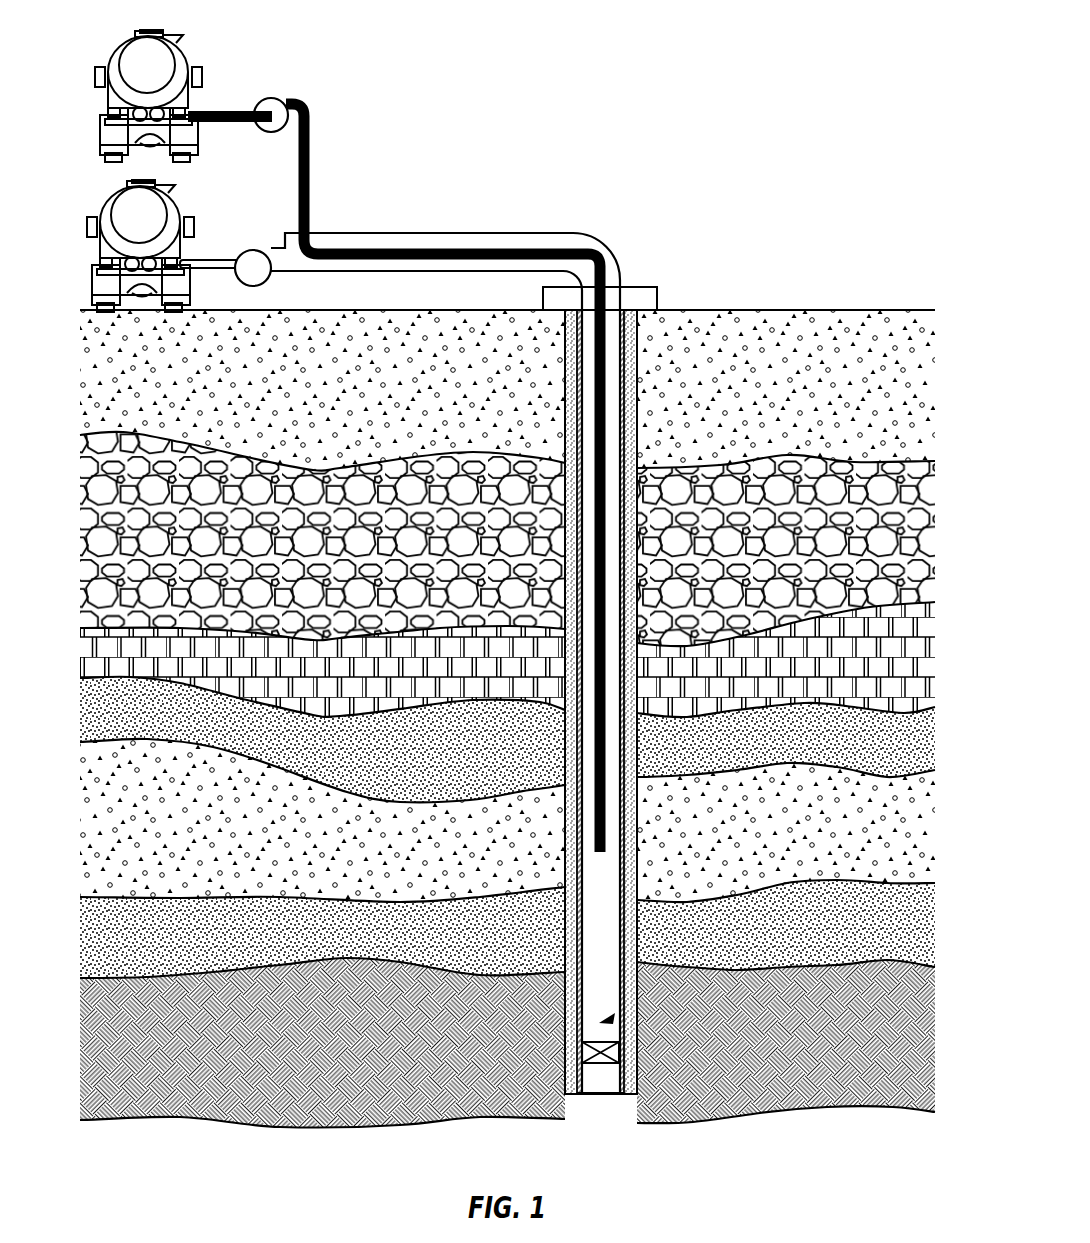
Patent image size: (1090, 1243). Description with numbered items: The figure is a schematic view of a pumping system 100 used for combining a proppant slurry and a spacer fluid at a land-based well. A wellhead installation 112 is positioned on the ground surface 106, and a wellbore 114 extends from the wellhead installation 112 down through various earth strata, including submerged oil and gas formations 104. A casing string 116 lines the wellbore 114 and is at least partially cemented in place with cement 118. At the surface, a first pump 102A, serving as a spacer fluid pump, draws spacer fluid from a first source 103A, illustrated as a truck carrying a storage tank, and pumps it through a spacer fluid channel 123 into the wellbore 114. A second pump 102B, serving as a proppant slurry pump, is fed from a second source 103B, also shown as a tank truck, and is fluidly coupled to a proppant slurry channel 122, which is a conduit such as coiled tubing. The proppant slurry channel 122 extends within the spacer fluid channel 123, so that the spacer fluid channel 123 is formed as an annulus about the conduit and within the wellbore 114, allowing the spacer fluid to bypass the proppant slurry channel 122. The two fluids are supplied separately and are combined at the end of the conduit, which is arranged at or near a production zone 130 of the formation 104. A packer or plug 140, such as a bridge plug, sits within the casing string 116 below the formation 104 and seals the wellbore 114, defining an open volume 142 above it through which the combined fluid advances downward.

The pumping system 100 is at (450, 50).
The first pump 102A is at (253, 257).
The second pump 102B is at (271, 103).
The first source 103A is at (116, 207).
The second source 103B is at (130, 53).
The formation 104 is at (876, 937).
The ground surface 106 is at (820, 310).
The wellhead installation 112 is at (648, 298).
The wellbore 114 is at (555, 415).
The casing string 116 is at (626, 418).
The cement 118 is at (564, 354).
The proppant slurry channel 122 is at (606, 375).
The spacer fluid channel 123 is at (450, 233).
The production zone 130 is at (552, 850).
The packer or plug 140 is at (613, 1050).
The open volume 142 is at (612, 1018).